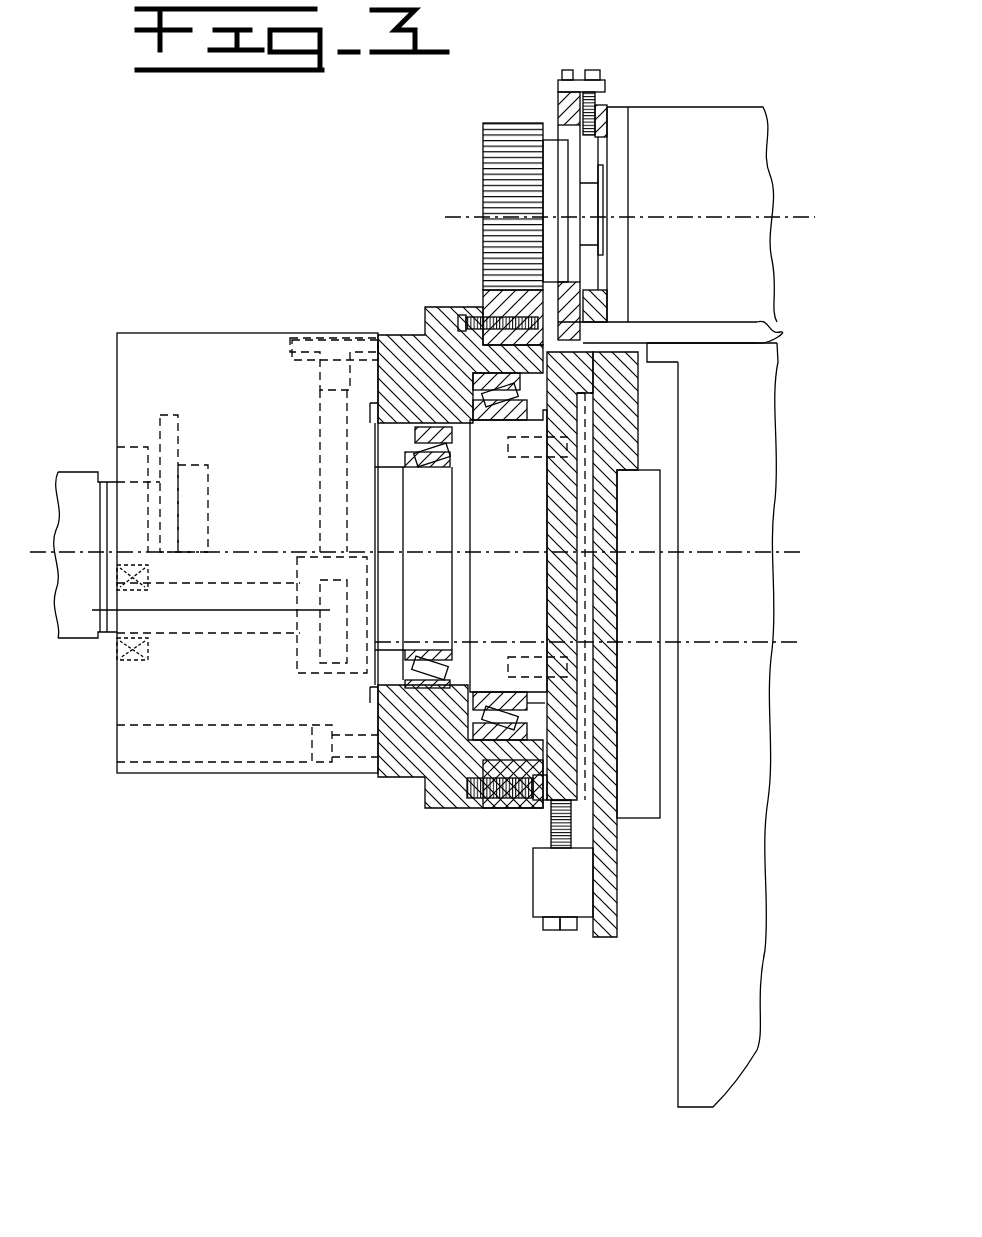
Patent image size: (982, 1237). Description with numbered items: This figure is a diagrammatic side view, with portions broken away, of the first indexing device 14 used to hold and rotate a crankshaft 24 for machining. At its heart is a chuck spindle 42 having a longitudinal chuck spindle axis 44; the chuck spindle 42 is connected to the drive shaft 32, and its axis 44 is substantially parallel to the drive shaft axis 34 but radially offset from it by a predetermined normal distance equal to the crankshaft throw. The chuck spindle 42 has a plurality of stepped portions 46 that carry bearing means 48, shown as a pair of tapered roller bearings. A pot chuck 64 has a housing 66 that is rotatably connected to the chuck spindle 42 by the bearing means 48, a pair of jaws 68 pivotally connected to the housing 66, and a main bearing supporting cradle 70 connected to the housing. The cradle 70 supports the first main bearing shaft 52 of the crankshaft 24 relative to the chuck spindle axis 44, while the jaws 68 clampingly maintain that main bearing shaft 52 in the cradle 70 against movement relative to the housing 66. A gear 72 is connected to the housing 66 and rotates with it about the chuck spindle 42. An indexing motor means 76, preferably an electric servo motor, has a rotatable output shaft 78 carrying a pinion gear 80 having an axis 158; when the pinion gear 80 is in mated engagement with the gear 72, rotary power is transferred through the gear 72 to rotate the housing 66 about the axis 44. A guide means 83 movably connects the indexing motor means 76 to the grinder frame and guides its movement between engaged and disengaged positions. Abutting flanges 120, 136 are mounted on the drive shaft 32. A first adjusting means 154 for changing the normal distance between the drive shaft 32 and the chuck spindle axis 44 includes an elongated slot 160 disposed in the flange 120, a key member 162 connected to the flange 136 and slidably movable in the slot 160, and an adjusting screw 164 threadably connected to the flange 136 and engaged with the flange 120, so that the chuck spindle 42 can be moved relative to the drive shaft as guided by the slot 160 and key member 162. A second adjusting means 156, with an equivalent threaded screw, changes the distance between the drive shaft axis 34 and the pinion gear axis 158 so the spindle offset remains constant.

The first indexing device 14 is at (740, 60).
The crankshaft 24 is at (58, 596).
The drive shaft 32 is at (643, 793).
The drive shaft axis 34 is at (802, 642).
The chuck spindle 42 is at (540, 517).
The chuck spindle axis 44 is at (802, 552).
The stepped portions 46 is at (413, 480).
The bearing means 48 is at (458, 356).
The first main bearing shaft 52 is at (115, 645).
The pot chuck 64 is at (150, 430).
The housing 66 is at (242, 333).
The jaws 68 is at (125, 465).
The main bearing supporting cradle 70 is at (130, 663).
The gear 72 is at (480, 300).
The indexing motor means 76 is at (775, 202).
The rotatable output shaft 78 is at (600, 187).
The pinion gear 80 is at (485, 153).
The guide means 83 is at (770, 339).
The flange 120 is at (546, 795).
The flange 136 is at (623, 937).
The first adjusting means 154 is at (512, 862).
The second adjusting means 156 is at (622, 70).
The axis of the pinion gear 158 is at (455, 216).
The elongated slot 160 is at (593, 718).
The key member 162 is at (593, 605).
The adjusting screw 164 is at (553, 930).